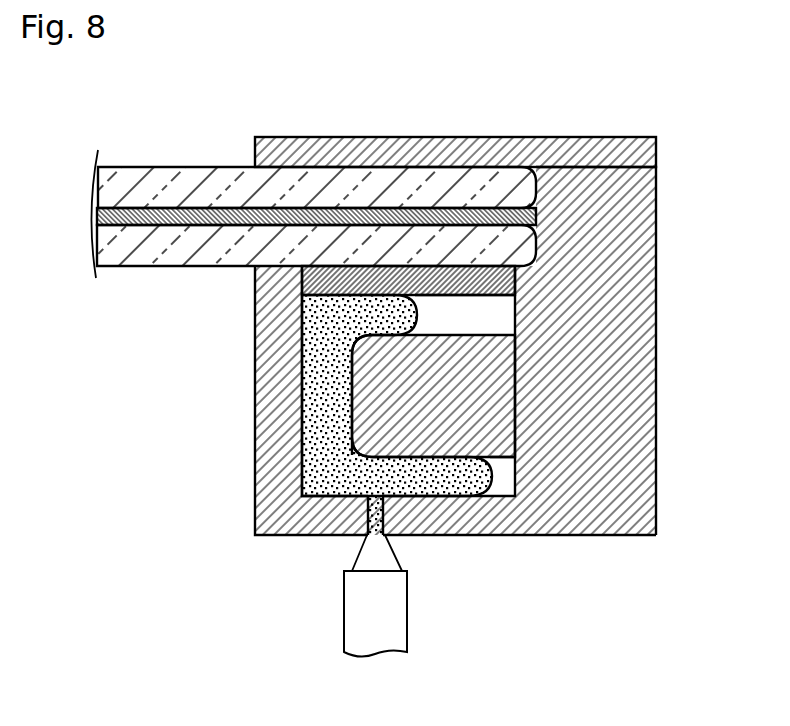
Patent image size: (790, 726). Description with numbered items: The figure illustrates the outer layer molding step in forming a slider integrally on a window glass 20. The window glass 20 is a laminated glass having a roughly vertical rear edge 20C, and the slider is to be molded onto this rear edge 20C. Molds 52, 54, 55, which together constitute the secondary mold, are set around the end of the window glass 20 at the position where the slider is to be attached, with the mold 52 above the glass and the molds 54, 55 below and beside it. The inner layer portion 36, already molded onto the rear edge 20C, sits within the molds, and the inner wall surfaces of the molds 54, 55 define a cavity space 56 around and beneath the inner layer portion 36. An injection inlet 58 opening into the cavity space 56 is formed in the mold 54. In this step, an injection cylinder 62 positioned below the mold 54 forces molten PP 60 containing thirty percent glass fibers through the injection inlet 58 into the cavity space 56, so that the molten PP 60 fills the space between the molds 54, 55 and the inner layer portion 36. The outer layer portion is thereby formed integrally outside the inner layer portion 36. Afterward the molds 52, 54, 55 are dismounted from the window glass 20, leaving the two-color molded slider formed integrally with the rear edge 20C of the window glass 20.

The window glass 20 is at (149, 164).
The rear edge 20C is at (537, 217).
The inner layer portion 36 is at (503, 282).
The mold 52 is at (404, 146).
The mold 54 is at (296, 527).
The mold 55 is at (656, 437).
The cavity space 56 is at (508, 313).
The injection inlet 58 is at (380, 520).
The molten PP 60 is at (302, 395).
The injection cylinder 62 is at (377, 645).